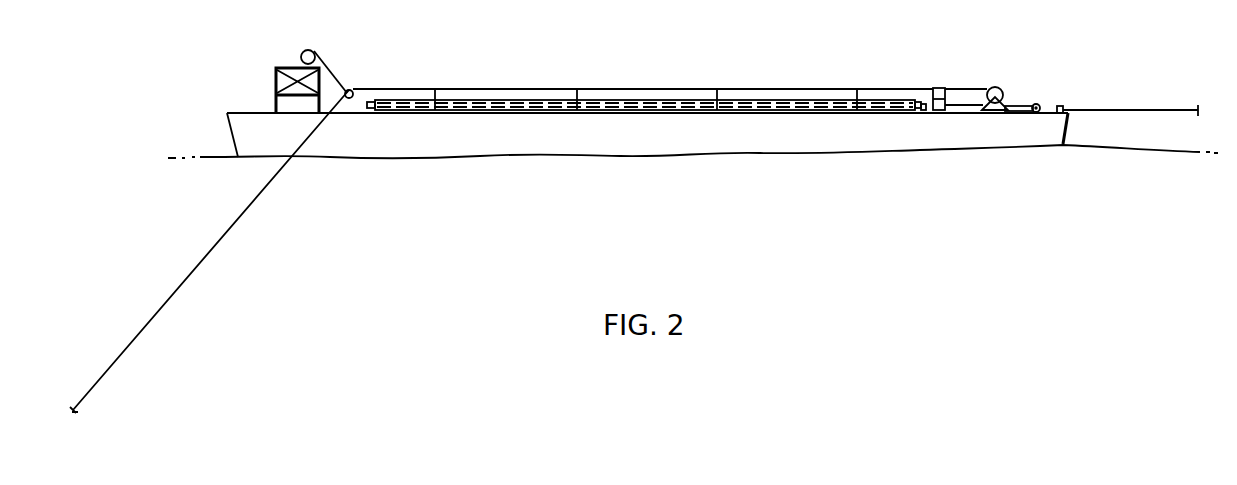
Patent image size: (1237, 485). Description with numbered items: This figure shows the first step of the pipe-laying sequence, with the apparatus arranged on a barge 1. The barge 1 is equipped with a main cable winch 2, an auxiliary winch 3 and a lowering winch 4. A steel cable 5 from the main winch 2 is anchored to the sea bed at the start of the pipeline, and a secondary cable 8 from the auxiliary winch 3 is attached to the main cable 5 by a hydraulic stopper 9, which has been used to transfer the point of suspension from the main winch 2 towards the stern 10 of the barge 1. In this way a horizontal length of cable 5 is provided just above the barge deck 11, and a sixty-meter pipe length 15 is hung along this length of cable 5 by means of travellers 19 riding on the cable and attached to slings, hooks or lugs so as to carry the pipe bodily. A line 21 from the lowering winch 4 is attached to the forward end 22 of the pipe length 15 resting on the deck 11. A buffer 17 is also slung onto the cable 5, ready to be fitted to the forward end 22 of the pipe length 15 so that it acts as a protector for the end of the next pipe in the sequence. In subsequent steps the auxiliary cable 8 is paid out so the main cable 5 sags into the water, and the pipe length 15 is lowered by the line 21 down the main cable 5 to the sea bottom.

The barge 1 is at (694, 151).
The main cable winch 2 is at (1001, 90).
The auxiliary winch 3 is at (312, 49).
The lowering winch 4 is at (1040, 105).
The steel cable 5 is at (503, 88).
The secondary cable 8 is at (328, 68).
The hydraulic stopper 9 is at (353, 90).
The stern 10 is at (232, 137).
The barge deck 11 is at (350, 114).
The pipe length 15 is at (790, 106).
The buffer 17 is at (948, 88).
The travellers 19 is at (435, 88).
The line 21 is at (963, 107).
The forward end 22 is at (922, 112).